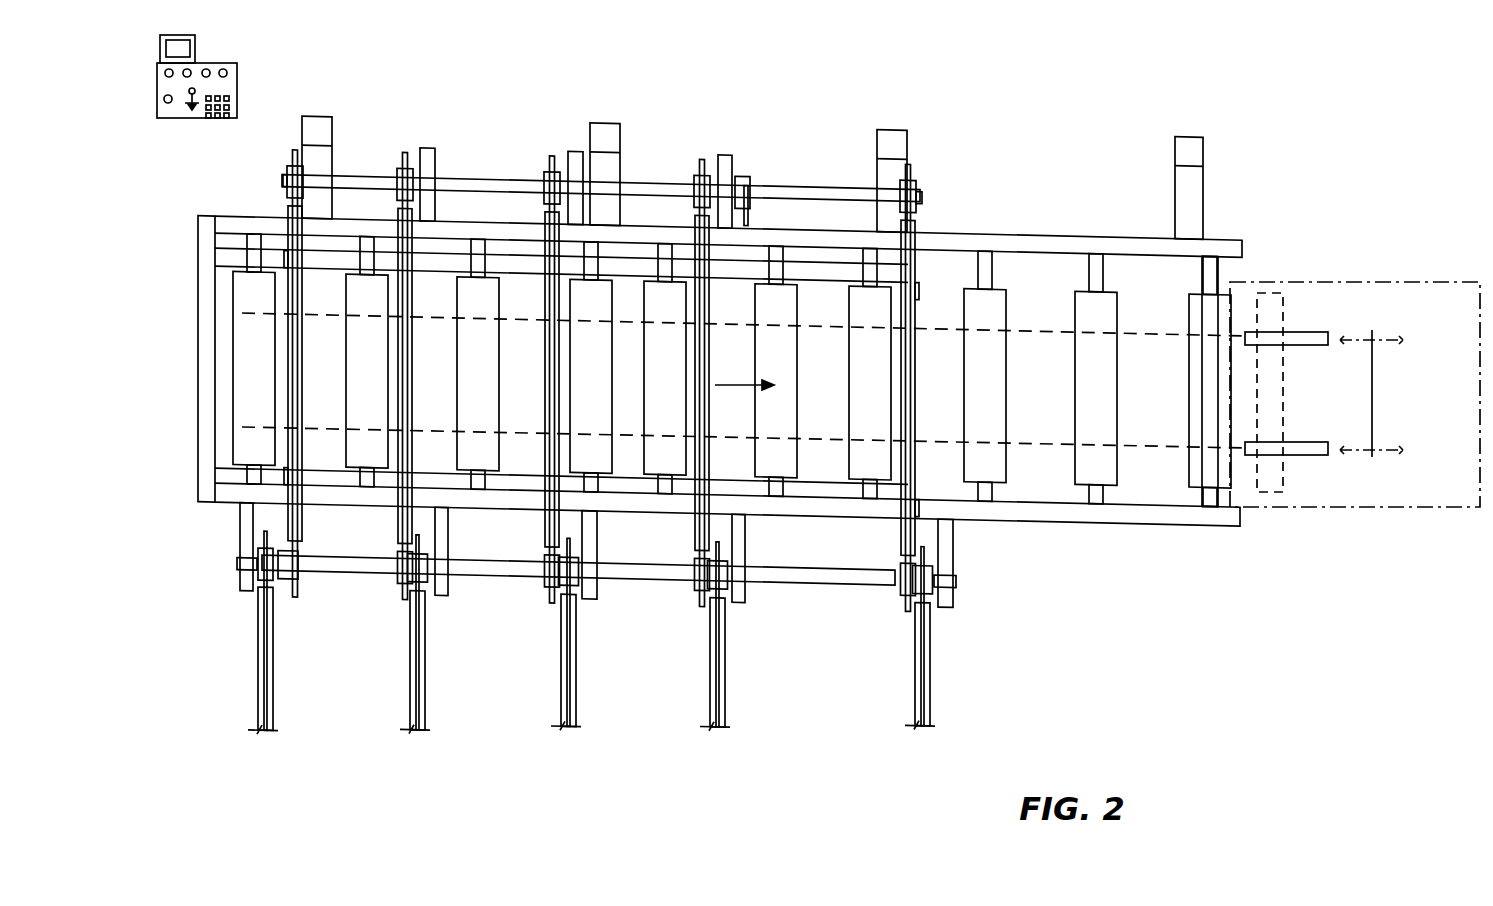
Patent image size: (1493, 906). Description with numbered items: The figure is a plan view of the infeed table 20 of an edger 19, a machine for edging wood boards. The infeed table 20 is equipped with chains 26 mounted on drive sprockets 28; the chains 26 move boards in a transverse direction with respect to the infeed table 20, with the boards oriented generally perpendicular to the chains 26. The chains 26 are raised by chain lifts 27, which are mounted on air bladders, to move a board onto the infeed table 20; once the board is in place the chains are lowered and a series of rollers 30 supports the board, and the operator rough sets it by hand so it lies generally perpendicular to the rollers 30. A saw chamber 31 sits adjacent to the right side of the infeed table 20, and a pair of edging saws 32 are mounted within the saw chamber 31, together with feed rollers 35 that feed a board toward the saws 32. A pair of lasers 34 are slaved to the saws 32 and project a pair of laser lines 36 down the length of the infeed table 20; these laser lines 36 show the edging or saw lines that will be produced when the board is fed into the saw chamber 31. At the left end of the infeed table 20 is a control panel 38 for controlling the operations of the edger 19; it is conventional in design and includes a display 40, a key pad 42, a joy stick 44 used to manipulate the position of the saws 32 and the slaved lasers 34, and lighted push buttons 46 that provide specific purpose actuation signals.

The edger 19 is at (1077, 118).
The infeed table 20 is at (178, 400).
The chains 26 is at (397, 525).
The chain lifts 27 is at (297, 478).
The drive sprockets 28 is at (289, 168).
The rollers 30 is at (241, 384).
The saw chamber 31 is at (1353, 283).
The edging saws 32 is at (1390, 338).
The lasers 34 is at (1287, 331).
The feed rollers 35 is at (1264, 293).
The laser lines 36 is at (1142, 336).
The control panel 38 is at (229, 45).
The display 40 is at (187, 35).
The key pad 42 is at (201, 110).
The joy stick 44 is at (189, 99).
The lighted push buttons 46 is at (226, 68).